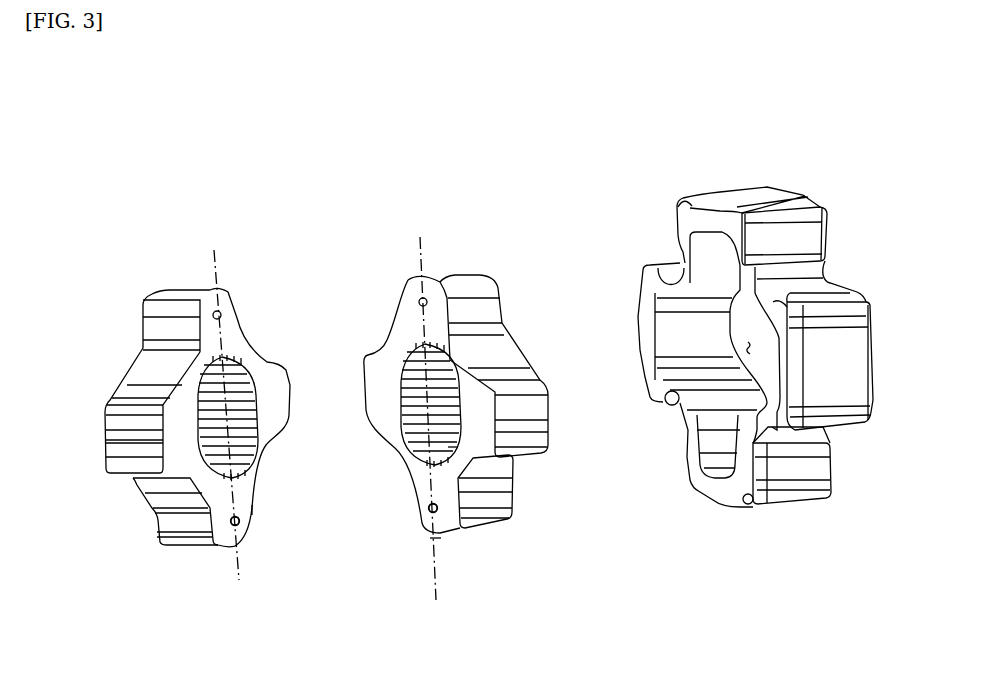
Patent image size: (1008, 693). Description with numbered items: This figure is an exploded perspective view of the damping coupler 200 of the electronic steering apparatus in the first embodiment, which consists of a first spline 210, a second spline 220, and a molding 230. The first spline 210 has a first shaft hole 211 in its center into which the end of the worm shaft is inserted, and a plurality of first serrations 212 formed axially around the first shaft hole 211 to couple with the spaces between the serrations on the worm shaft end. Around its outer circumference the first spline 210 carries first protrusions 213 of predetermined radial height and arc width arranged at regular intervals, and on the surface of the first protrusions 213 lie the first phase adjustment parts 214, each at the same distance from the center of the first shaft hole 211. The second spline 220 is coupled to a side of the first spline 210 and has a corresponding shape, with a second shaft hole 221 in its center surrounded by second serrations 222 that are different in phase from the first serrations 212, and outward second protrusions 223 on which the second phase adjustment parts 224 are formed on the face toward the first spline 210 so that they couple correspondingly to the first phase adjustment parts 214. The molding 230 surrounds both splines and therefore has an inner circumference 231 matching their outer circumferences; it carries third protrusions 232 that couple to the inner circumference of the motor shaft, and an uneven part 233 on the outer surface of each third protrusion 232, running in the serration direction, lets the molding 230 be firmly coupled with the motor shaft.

The damping coupler 200 is at (414, 154).
The first spline 210 is at (260, 327).
The first shaft hole 211 is at (220, 420).
The first serrations 212 is at (193, 437).
The first protrusion 213 is at (251, 513).
The first phase adjustment part 214 is at (238, 525).
The second spline 220 is at (389, 298).
The second shaft hole 221 is at (445, 388).
The second serrations 222 is at (453, 450).
The second protrusion 223 is at (436, 538).
The second phase adjustment part 224 is at (432, 511).
The molding 230 is at (648, 226).
The inner circumference 231 is at (725, 352).
The third protrusions 232 is at (778, 188).
The uneven part 233 is at (818, 197).